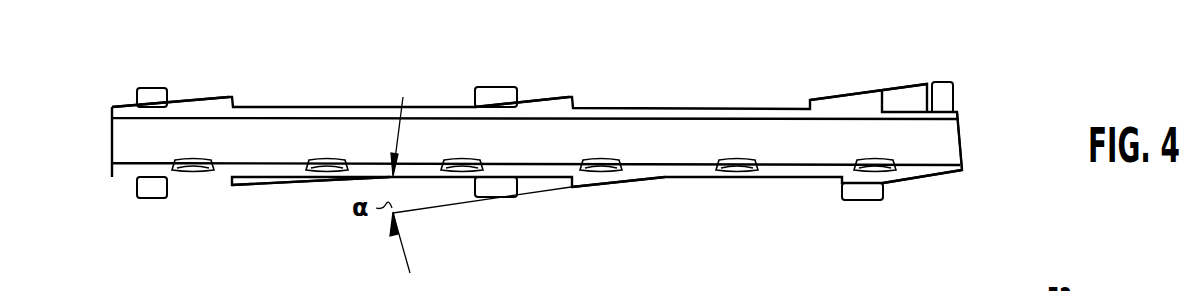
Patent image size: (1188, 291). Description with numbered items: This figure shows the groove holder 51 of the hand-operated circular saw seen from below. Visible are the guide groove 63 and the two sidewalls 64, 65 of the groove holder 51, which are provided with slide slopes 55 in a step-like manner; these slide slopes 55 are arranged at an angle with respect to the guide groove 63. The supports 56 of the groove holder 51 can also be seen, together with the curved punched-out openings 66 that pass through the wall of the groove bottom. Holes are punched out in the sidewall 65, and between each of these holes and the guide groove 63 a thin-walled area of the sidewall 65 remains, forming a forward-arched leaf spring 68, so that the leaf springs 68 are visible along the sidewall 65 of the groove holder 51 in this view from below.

The groove holder 51 is at (966, 124).
The slide slopes 55 is at (538, 100).
The supports 56 is at (152, 98).
The guide groove 63 is at (923, 150).
The sidewall 64 is at (342, 113).
The sidewall 65 is at (693, 172).
The curved punched-out openings 66 is at (753, 173).
The leaf springs 68 is at (602, 162).